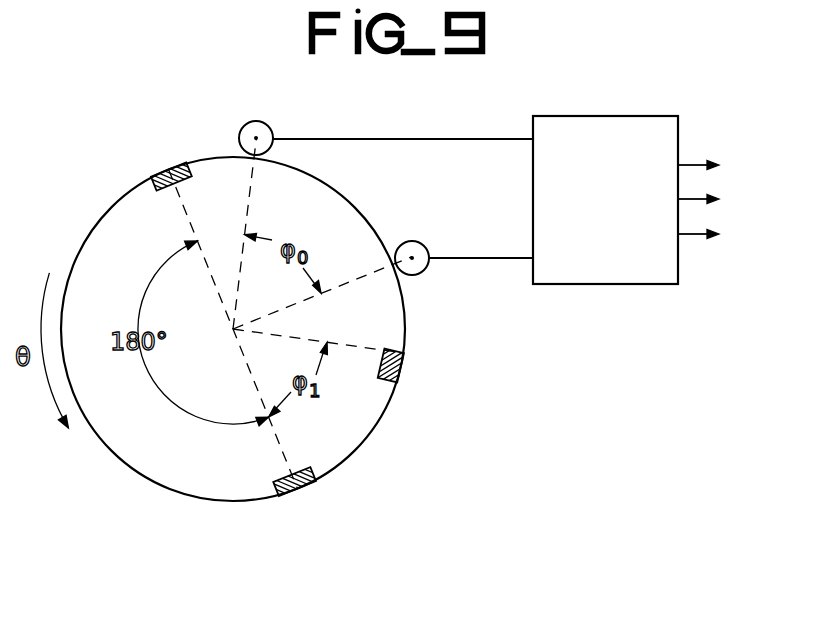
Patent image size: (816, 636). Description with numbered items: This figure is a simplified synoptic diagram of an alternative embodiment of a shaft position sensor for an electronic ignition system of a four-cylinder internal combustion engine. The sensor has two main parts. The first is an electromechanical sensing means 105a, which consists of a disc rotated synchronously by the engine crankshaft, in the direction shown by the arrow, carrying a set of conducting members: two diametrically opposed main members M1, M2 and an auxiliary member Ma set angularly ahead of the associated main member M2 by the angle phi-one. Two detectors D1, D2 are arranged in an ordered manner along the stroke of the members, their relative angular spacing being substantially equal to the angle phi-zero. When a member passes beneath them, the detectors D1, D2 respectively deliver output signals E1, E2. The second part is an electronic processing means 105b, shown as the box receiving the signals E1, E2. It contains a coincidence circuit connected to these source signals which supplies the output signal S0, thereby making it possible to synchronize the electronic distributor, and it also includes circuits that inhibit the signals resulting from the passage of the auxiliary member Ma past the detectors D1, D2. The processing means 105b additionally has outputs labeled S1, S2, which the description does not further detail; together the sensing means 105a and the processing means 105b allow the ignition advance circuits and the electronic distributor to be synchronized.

The electromechanical sensing means 105a is at (248, 590).
The electronic processing means 105b is at (588, 105).
The main member M1 is at (175, 162).
The main member M2 is at (271, 498).
The auxiliary member Ma is at (400, 368).
The detector D1 is at (270, 92).
The detector D2 is at (412, 241).
The output signal E1 is at (403, 127).
The output signal E2 is at (481, 247).
The output signal S1 is at (719, 172).
The output signal S0 is at (719, 206).
The output signal S2 is at (719, 241).